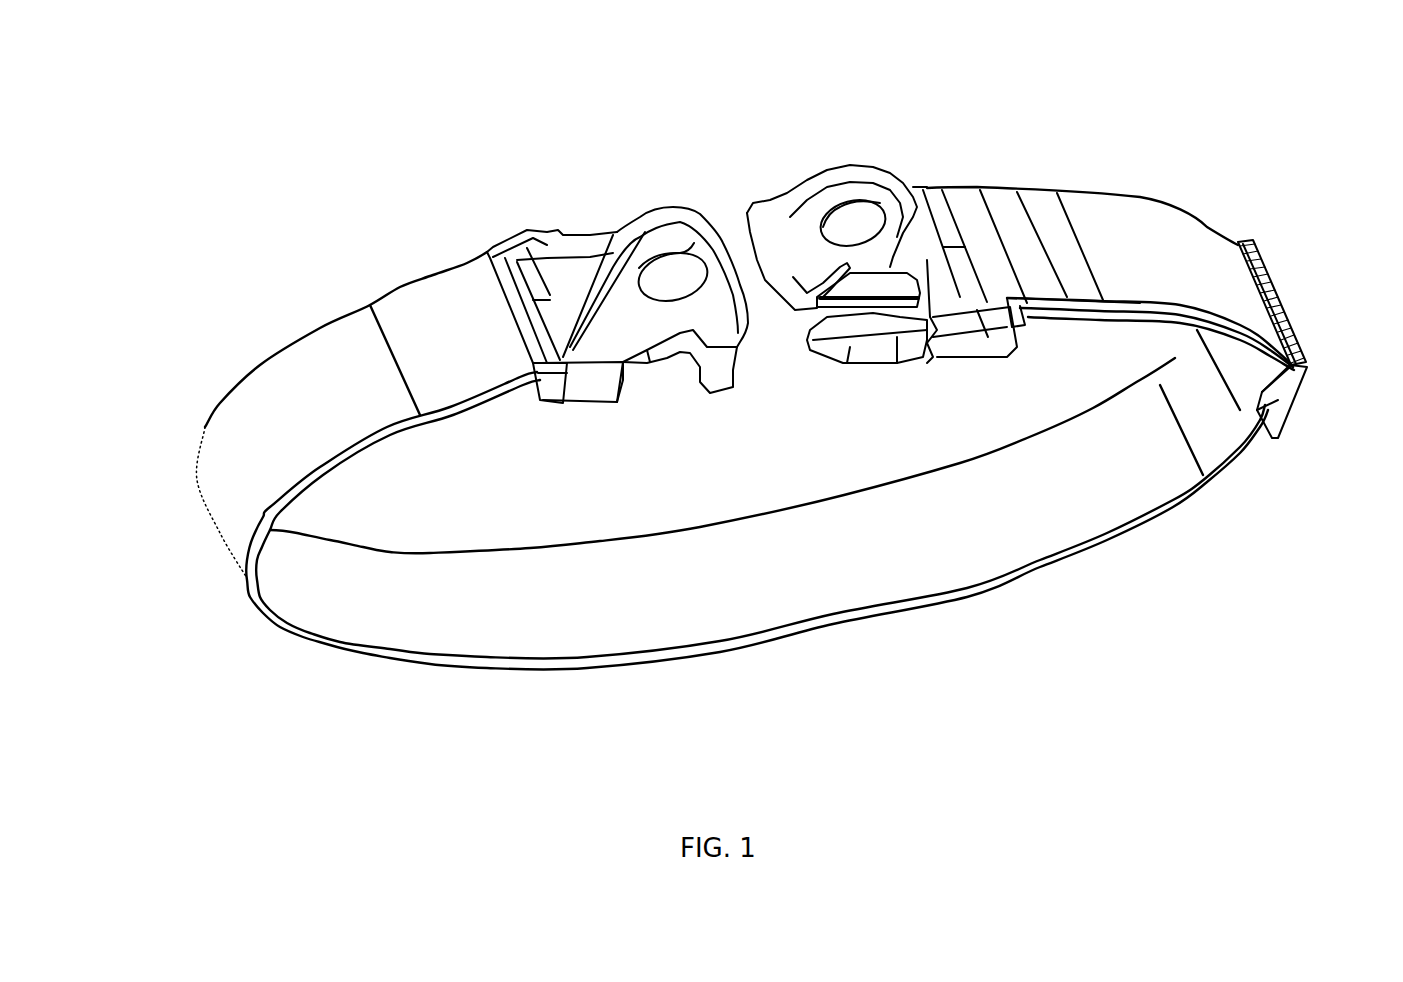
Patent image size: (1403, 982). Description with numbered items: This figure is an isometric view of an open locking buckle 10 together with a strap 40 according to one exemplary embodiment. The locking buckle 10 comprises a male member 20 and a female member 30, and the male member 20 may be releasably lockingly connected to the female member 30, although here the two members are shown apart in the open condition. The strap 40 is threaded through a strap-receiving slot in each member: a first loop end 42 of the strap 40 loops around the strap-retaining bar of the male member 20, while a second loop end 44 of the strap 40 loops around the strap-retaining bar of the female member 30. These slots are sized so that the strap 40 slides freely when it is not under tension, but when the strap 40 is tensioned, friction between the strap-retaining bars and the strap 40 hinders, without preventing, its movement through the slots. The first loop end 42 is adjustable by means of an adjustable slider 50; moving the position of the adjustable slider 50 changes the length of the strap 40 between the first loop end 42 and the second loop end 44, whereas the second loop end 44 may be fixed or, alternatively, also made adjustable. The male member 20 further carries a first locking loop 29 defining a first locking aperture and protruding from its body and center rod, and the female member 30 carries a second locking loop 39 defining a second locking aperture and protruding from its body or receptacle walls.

The locking buckle 10 is at (530, 102).
The male member 20 is at (760, 200).
The first locking loop 29 is at (862, 191).
The female member 30 is at (550, 243).
The second locking loop 39 is at (658, 220).
The strap 40 is at (217, 427).
The first loop end 42 is at (1017, 223).
The second loop end 44 is at (430, 287).
The adjustable slider 50 is at (1280, 403).